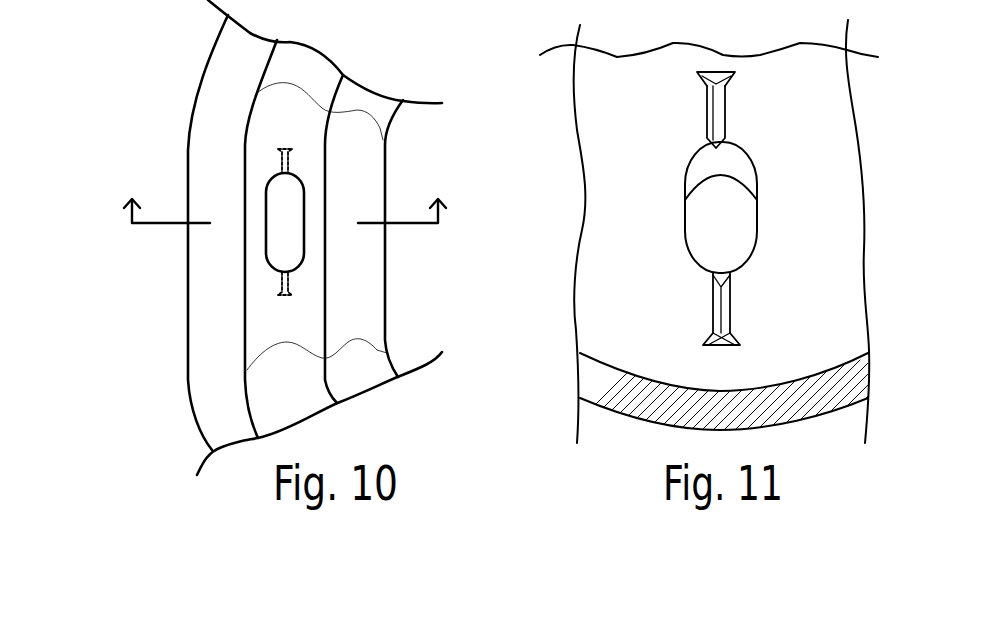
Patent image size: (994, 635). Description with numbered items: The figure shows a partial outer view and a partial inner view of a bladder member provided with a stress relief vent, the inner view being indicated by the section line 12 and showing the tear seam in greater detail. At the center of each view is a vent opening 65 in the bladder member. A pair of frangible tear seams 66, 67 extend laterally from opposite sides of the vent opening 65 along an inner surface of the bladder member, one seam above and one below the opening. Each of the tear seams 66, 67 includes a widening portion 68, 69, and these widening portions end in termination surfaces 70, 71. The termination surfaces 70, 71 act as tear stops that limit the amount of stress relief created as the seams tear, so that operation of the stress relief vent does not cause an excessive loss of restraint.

In FIG. 10, the section line 12- 12 is at (282, 200).
In FIG. 10, the vent opening 65 is at (271, 245).
In FIG. 11, the vent opening 65 is at (753, 223).
In FIG. 10, the frangible tear seam 66 is at (282, 162).
In FIG. 11, the frangible tear seam 66 is at (724, 315).
In FIG. 10, the frangible tear seam 67 is at (291, 280).
In FIG. 11, the frangible tear seam 67 is at (721, 108).
In FIG. 11, the widening portion 68 is at (706, 340).
In FIG. 11, the widening portion 69 is at (702, 80).
In FIG. 11, the termination surface 70 is at (736, 337).
In FIG. 11, the termination surface 71 is at (714, 78).